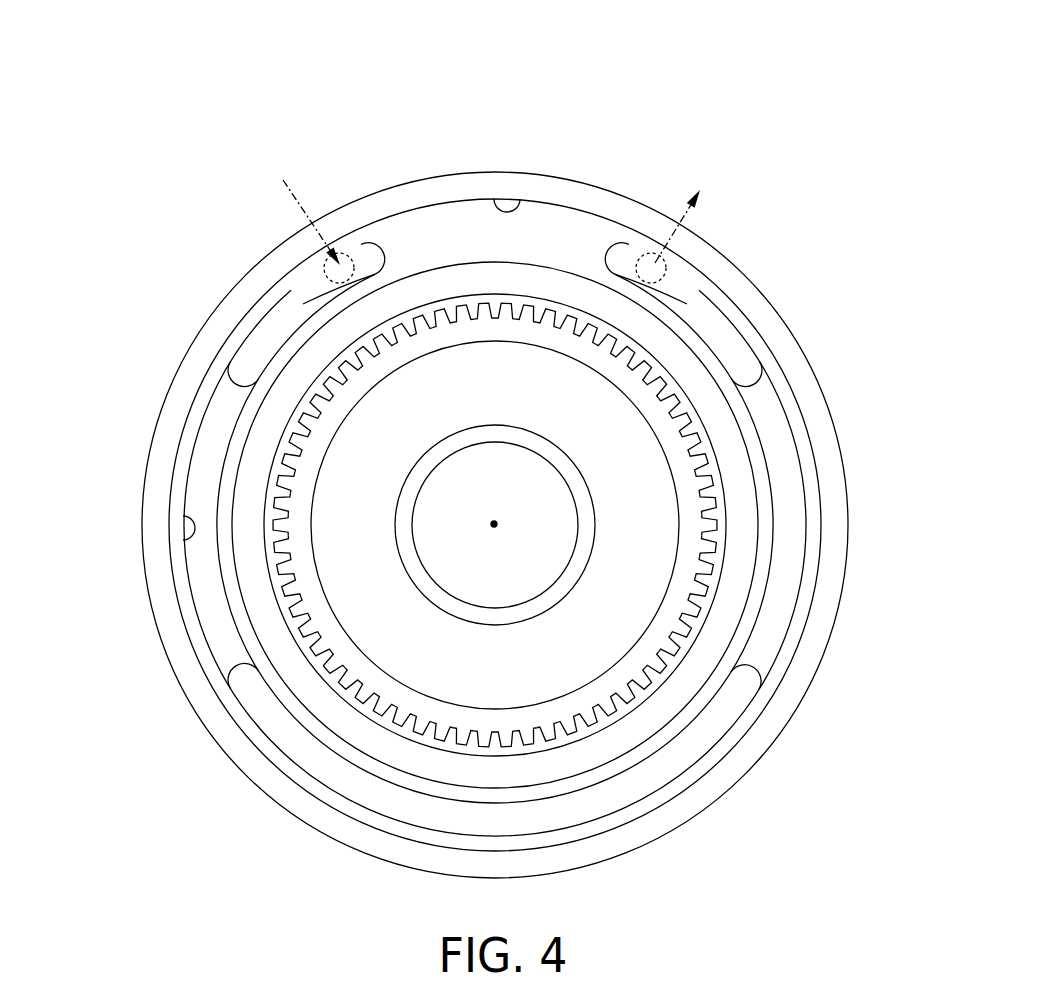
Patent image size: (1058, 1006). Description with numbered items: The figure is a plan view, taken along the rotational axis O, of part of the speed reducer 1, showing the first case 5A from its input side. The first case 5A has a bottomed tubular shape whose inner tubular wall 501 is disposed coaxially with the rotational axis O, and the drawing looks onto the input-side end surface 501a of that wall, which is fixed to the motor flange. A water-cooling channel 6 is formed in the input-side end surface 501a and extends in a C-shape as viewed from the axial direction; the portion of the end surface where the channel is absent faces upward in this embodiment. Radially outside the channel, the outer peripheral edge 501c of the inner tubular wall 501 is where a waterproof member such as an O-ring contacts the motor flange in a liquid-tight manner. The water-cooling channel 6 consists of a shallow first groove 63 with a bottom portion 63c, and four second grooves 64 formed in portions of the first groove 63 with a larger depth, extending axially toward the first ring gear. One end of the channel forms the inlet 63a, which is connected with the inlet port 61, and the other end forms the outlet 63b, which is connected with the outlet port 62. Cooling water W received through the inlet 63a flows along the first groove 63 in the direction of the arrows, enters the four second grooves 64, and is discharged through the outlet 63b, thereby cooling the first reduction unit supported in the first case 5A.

The speed reducer 1 is at (770, 154).
The first case 5A is at (568, 172).
The inner tubular wall 501 is at (832, 387).
The input-side end surface 501a is at (455, 238).
The outer peripheral edge 501c is at (511, 200).
The water-cooling channel 6 is at (283, 278).
The inlet port 61 is at (343, 253).
The outlet port 62 is at (665, 268).
The first groove 63 is at (183, 523).
The inlet 63a is at (376, 246).
The outlet 63b is at (638, 250).
The bottom portion 63c is at (225, 405).
The second grooves 64 is at (270, 330).
The rotational axis O is at (498, 524).
The cooling water W is at (493, 206).